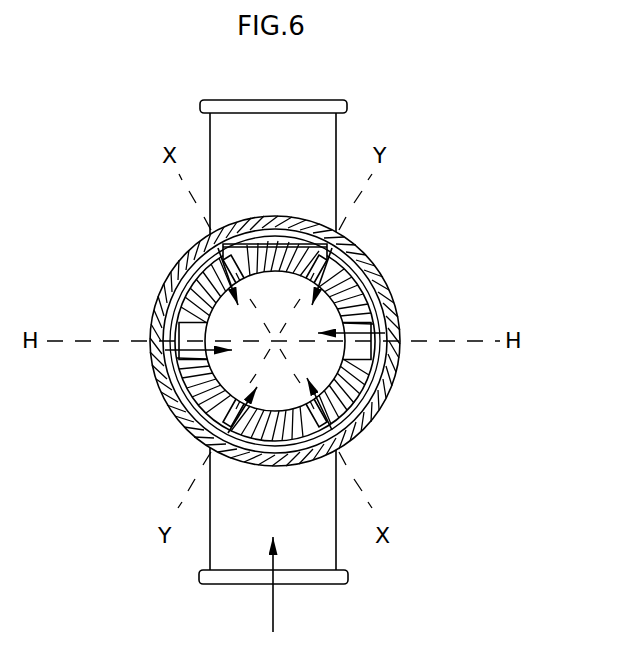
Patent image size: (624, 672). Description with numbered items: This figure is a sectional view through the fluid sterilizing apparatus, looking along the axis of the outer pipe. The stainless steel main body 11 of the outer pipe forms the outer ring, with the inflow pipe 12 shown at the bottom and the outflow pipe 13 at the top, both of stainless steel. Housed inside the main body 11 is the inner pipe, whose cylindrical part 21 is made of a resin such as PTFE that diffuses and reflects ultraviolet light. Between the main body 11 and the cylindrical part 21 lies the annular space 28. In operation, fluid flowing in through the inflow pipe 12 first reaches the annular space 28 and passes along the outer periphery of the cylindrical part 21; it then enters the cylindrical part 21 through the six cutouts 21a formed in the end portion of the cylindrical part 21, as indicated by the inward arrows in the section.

The main body 11 is at (172, 415).
The inflow pipe 12 is at (347, 577).
The outflow pipe 13 is at (348, 106).
The cylindrical part 21 is at (380, 276).
The cutouts 21a is at (362, 350).
The annular space 28 is at (368, 407).